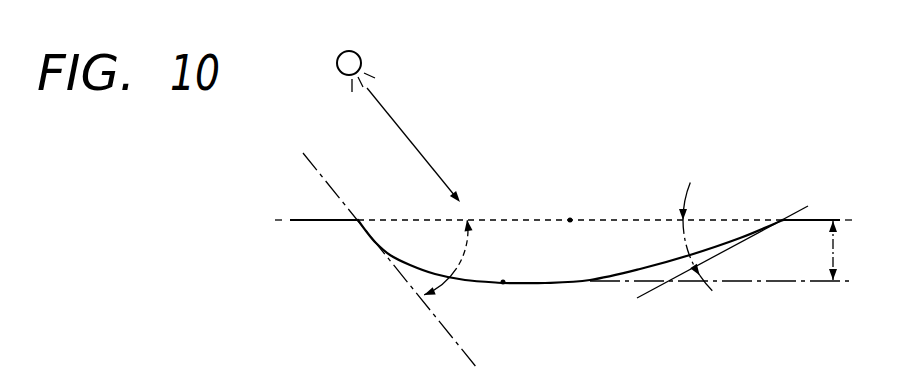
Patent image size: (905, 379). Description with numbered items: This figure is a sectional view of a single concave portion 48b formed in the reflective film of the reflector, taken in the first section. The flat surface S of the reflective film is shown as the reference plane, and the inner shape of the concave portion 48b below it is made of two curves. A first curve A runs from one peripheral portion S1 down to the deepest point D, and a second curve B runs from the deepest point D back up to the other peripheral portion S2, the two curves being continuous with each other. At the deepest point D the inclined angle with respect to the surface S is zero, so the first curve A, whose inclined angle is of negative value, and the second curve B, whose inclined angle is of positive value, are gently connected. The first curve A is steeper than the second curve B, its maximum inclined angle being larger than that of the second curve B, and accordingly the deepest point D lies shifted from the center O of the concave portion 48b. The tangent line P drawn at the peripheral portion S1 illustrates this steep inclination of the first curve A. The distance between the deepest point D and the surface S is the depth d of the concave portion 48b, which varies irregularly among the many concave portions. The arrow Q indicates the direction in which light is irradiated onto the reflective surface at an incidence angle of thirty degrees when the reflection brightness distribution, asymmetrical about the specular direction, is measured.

The incidence direction Q is at (360, 62).
The tangent line at first boundary point P is at (295, 158).
The surface of the reflective film S is at (813, 220).
The concave portion 48b is at (570, 255).
The first curve A is at (404, 262).
The second curve B is at (590, 281).
The one peripheral portion S1 is at (358, 220).
The other peripheral portion S2 is at (783, 220).
The center of the concave portion O is at (571, 206).
The deepest point D is at (674, 298).
The depth of the concave portion d is at (842, 250).